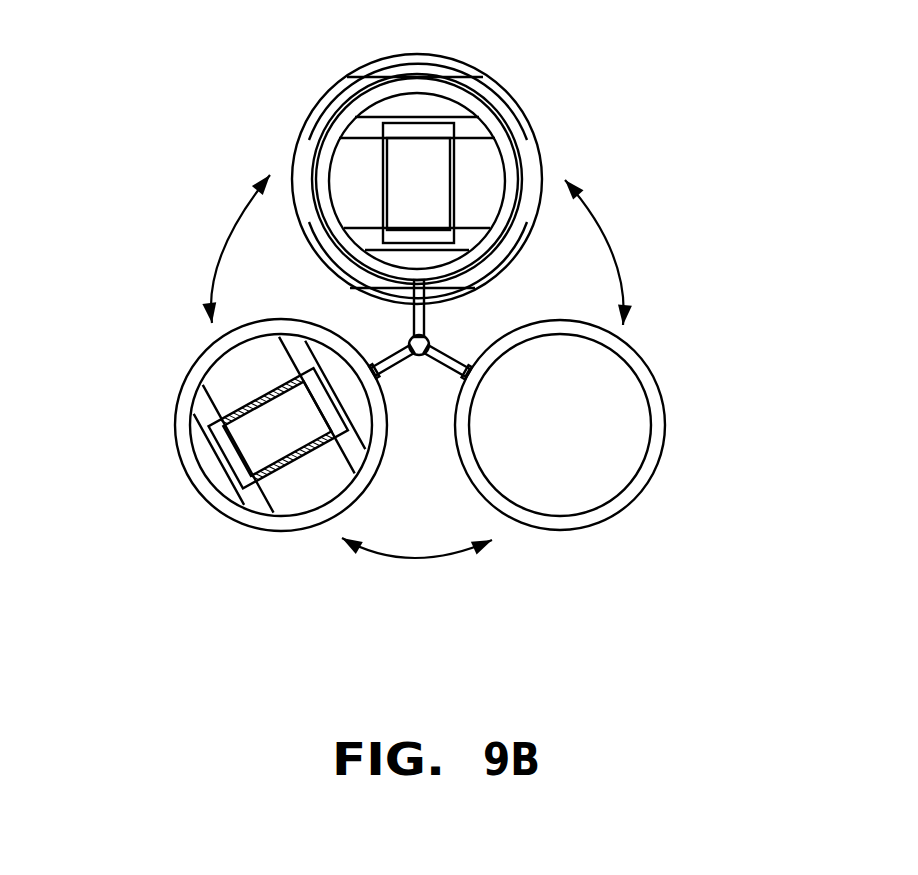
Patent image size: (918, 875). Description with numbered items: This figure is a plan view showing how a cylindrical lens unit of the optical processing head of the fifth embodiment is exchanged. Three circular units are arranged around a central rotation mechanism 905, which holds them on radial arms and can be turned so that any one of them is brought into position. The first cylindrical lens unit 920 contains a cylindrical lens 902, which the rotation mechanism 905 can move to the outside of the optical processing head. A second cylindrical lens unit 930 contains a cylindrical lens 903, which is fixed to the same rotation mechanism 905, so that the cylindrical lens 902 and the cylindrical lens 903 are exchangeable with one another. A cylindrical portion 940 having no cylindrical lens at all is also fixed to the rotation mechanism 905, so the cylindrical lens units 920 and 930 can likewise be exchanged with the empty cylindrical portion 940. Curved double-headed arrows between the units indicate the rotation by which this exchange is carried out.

The cylindrical lens unit 920 is at (320, 92).
The cylindrical lens 902 is at (402, 170).
The rotation mechanism 905 is at (411, 341).
The cylindrical lens unit 930 is at (168, 395).
The cylindrical lens 903 is at (255, 445).
The cylindrical portion 940 is at (682, 380).